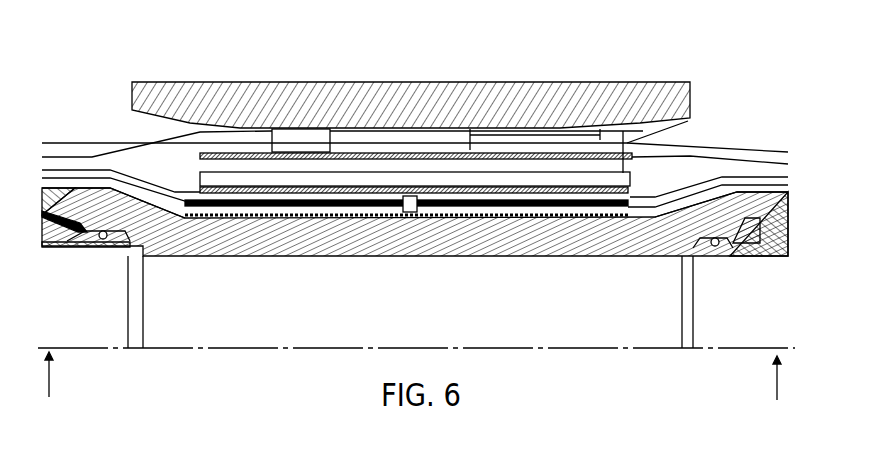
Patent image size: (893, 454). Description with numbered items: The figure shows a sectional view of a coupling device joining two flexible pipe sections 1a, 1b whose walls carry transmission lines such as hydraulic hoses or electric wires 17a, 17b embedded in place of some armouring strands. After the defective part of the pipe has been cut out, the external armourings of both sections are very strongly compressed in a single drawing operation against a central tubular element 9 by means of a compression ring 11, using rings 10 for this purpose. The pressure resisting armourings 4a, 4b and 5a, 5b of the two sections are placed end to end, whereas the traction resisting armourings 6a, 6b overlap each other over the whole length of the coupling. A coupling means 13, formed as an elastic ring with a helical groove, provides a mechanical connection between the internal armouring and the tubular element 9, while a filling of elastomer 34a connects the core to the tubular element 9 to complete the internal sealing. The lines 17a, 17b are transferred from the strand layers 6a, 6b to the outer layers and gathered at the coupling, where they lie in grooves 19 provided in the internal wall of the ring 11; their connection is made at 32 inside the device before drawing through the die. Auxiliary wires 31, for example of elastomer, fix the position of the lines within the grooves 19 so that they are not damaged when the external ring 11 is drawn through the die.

The pipe section 1a is at (51, 383).
The pipe section 1b is at (778, 388).
The pressure resisting armouring 4a is at (80, 187).
The pressure resisting armouring 4b is at (768, 208).
The pressure resisting armouring 5a is at (70, 178).
The pressure resisting armouring 5b is at (768, 192).
The traction resisting armouring 6a is at (57, 167).
The traction resisting armouring 6b is at (757, 179).
The tubular element 9 is at (583, 236).
The rings 10 is at (628, 190).
The compression ring 11 is at (553, 103).
The coupling means 13 is at (70, 247).
The electric or hydraulic line 17a is at (50, 148).
The electric or hydraulic line 17b is at (737, 157).
The grooves 19 is at (370, 131).
The auxiliary wires 31 is at (408, 141).
The connection of the lines 32 is at (299, 129).
The filling of elastomer 34a is at (46, 247).